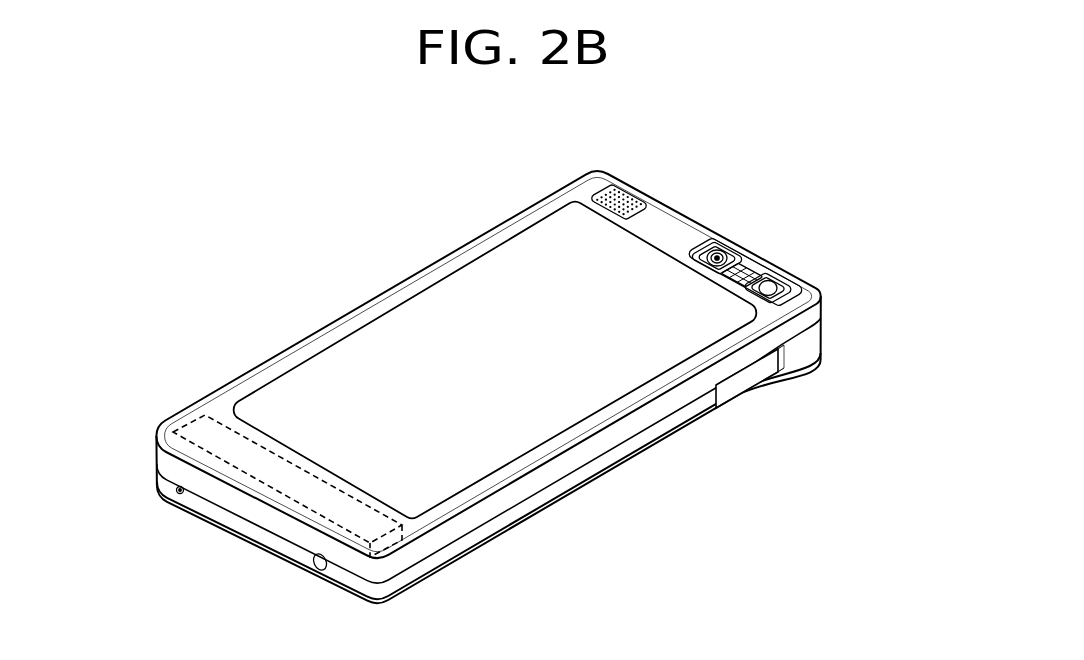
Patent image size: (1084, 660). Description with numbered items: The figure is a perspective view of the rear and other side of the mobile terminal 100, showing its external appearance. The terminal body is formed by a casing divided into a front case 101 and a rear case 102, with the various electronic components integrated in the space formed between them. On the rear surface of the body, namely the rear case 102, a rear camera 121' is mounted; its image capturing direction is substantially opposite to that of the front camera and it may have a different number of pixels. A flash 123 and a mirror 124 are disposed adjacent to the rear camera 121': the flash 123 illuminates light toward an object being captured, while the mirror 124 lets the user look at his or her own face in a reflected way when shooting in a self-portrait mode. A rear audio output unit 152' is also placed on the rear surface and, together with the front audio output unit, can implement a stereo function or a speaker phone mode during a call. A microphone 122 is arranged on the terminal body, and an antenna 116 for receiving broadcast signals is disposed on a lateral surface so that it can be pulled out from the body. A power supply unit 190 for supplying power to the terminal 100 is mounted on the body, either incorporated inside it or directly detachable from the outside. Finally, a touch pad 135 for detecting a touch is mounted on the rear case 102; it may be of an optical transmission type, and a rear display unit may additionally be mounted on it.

The mobile terminal 100 is at (448, 229).
The front case 101 is at (783, 351).
The rear case 102 is at (813, 323).
The antenna 116 is at (318, 569).
The rear camera 121' is at (745, 251).
The microphone 122 is at (177, 492).
The flash 123 is at (743, 268).
The mirror 124 is at (767, 288).
The touch pad 135 is at (404, 317).
The rear audio output unit 152' is at (652, 183).
The power supply unit 190 is at (187, 423).